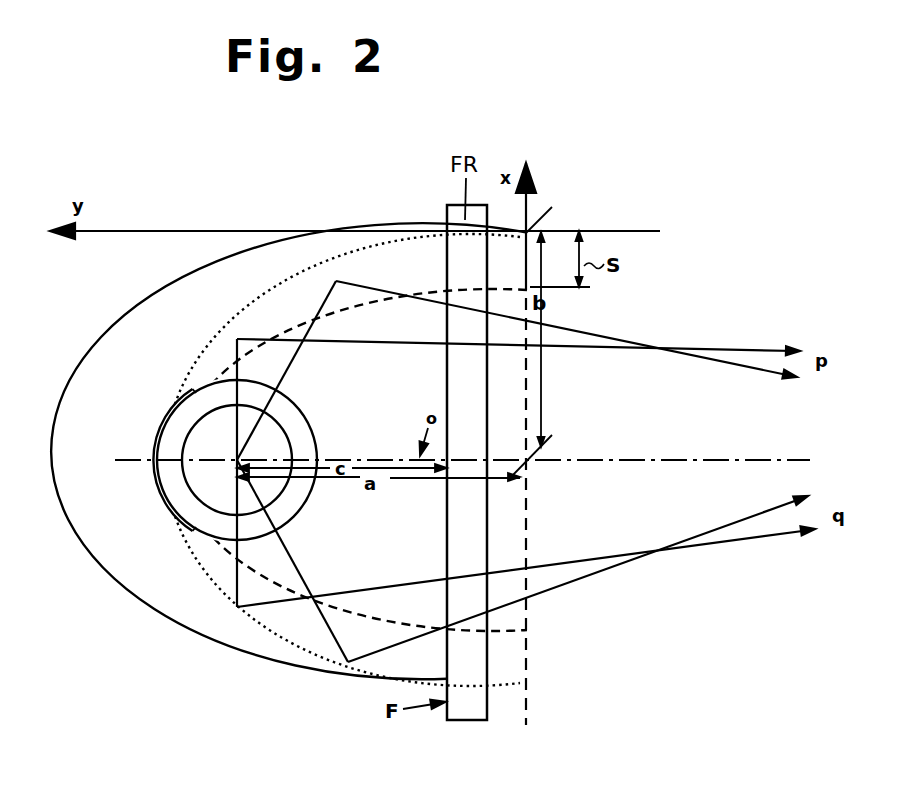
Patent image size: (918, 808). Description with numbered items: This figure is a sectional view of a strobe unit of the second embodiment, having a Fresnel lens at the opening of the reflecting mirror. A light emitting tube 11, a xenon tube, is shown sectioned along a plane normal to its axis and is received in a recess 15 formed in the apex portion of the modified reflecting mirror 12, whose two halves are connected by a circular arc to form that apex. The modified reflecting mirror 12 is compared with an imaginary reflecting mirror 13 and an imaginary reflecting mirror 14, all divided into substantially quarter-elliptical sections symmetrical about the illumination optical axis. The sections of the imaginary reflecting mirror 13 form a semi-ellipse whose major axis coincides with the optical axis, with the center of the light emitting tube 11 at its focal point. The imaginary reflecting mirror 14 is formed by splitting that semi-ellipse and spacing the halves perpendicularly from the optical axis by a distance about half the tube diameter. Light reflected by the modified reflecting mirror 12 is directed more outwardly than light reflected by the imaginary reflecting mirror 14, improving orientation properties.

The light emitting tube 11 is at (196, 437).
The modified reflecting mirror 12 is at (214, 345).
The imaginary reflecting mirror 13 is at (291, 326).
The imaginary reflecting mirror 14 is at (299, 269).
The recess 15 is at (148, 485).